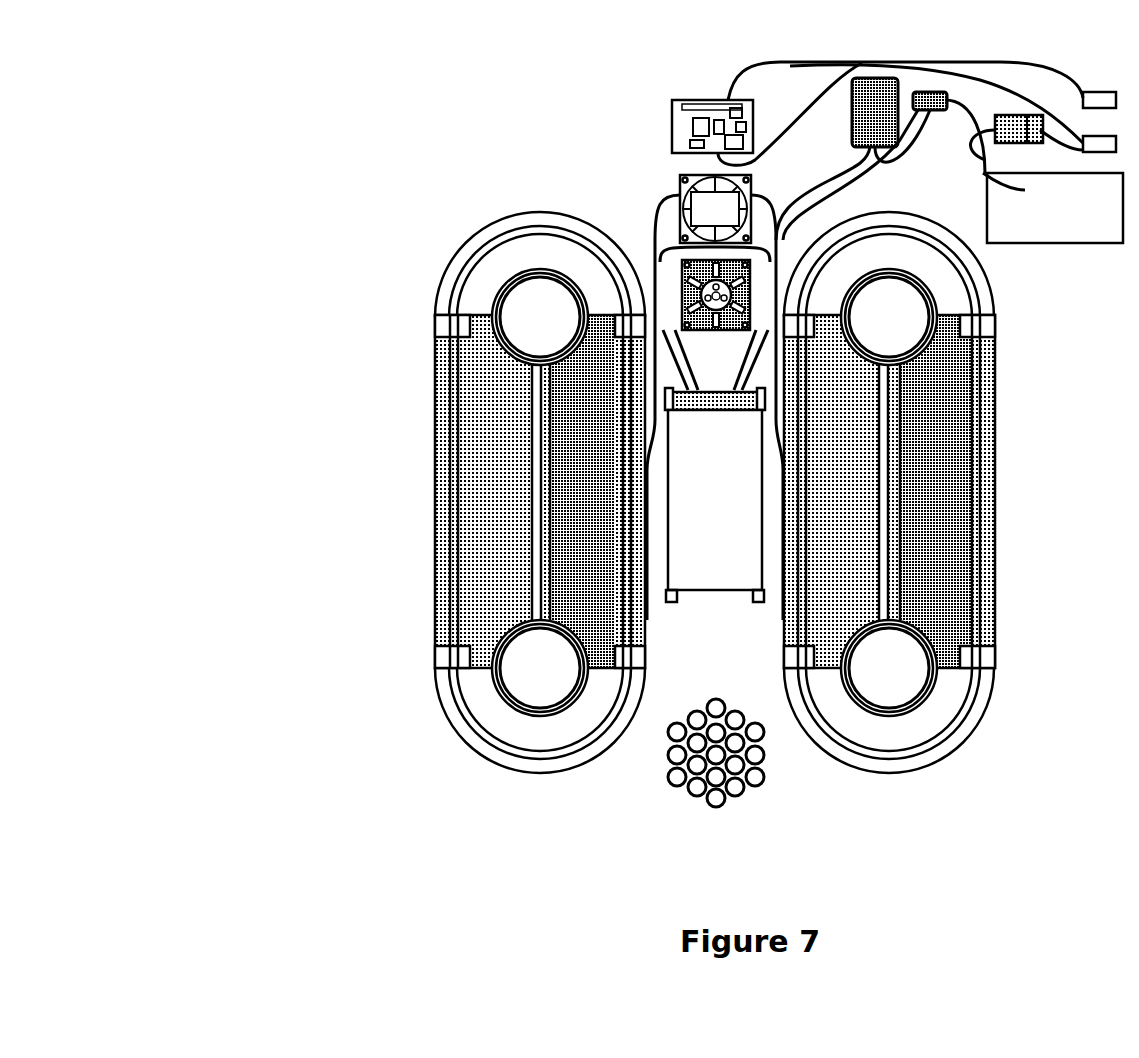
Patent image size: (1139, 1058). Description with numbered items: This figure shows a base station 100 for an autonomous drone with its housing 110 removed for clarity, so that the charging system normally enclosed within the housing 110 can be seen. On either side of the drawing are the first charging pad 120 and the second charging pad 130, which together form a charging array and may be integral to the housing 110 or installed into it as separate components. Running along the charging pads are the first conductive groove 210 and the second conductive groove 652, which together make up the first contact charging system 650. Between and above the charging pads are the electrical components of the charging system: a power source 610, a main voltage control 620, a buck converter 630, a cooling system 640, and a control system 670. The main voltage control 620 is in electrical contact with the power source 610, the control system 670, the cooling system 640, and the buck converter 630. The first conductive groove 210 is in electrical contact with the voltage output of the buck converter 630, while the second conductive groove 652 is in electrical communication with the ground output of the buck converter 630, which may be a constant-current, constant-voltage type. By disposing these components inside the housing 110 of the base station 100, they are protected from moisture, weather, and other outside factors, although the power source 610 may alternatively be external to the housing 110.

The base station 100 is at (186, 122).
The housing 110 is at (966, 284).
The first charging pad 120 is at (470, 417).
The second charging pad 130 is at (955, 413).
The first conductive groove 210 is at (538, 496).
The power source 610 is at (1055, 208).
The main voltage control 620 is at (715, 495).
The buck converter 630 is at (715, 209).
The cooling system 640 is at (668, 245).
The first contact charging system 650 is at (880, 544).
The second conductive groove 652 is at (893, 470).
The control system 670 is at (672, 106).